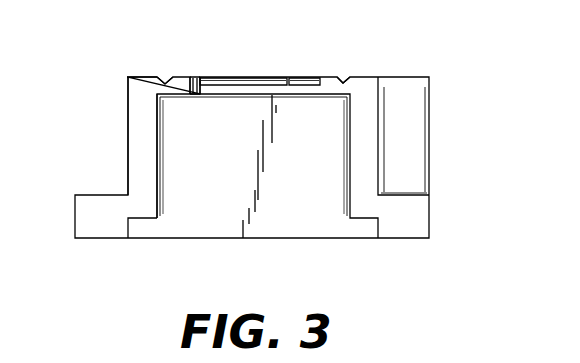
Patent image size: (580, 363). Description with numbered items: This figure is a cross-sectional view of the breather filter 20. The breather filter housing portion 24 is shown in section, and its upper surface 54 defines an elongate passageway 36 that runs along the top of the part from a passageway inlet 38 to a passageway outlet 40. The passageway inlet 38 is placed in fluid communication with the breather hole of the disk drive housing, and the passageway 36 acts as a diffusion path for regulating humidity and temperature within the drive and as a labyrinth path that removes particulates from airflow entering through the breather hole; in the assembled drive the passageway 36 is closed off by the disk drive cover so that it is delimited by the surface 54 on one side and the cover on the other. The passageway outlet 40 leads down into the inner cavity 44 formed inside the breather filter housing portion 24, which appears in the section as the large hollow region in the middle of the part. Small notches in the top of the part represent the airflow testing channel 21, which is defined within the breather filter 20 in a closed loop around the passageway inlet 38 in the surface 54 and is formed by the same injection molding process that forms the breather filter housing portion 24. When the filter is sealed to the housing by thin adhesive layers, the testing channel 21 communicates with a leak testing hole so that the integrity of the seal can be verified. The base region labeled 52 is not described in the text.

The breather filter 20 is at (97, 98).
The airflow testing channel 21 is at (170, 71).
The breather filter housing portion 24 is at (128, 147).
The elongate passageway 36 is at (240, 77).
The passageway inlet 38 is at (300, 77).
The passageway outlet 40 is at (197, 95).
The inner cavity 44 is at (212, 208).
The base section 52 is at (413, 238).
The surface 54 is at (134, 76).